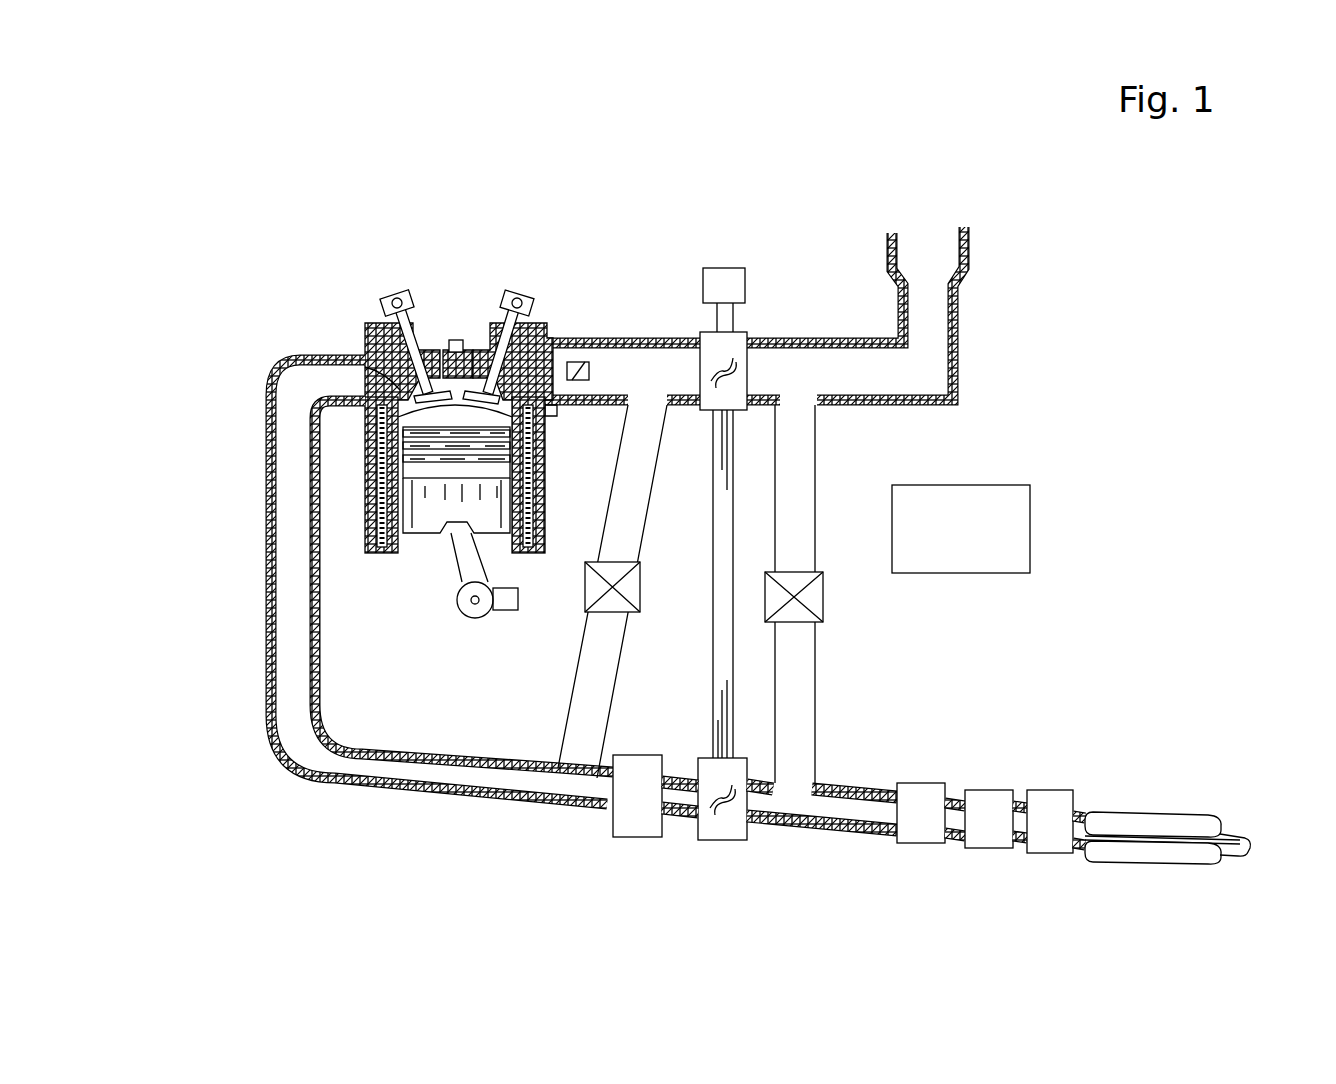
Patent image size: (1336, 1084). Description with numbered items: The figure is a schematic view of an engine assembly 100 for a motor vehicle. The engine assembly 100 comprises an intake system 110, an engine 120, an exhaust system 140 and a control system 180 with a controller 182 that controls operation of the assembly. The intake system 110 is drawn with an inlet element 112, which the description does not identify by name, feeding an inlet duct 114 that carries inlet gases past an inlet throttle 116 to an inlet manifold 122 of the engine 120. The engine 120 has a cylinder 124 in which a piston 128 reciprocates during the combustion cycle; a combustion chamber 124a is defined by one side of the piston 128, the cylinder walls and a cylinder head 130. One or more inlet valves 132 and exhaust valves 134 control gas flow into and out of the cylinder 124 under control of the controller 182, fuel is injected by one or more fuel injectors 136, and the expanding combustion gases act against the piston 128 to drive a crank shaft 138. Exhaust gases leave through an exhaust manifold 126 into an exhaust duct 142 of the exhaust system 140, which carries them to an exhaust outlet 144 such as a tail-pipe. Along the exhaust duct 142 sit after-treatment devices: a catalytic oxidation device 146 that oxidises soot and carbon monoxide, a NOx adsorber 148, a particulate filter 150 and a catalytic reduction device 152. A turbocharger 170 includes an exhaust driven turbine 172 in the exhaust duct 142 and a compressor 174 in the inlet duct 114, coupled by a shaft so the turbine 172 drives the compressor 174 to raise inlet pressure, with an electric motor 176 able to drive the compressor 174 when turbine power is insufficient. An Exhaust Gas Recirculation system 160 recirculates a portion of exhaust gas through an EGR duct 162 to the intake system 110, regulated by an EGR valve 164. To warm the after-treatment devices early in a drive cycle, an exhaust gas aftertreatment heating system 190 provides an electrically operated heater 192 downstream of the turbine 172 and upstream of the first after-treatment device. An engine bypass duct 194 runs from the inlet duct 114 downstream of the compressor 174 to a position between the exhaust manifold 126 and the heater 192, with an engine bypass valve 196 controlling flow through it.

The engine assembly 100 is at (613, 228).
The intake system 110 is at (978, 311).
The intake passage 112 is at (932, 225).
The inlet duct 114 is at (960, 362).
The inlet throttle 116 is at (600, 345).
The engine 120 is at (380, 262).
The inlet manifold 122 is at (527, 390).
The cylinder 124 is at (405, 548).
The combustion chamber 124a is at (452, 413).
The exhaust manifold 126 is at (373, 387).
The piston 128 is at (497, 503).
The cylinder head 130 is at (473, 350).
The inlet valves 132 is at (535, 340).
The exhaust valves 134 is at (378, 365).
The fuel injectors 136 is at (540, 410).
The crank shaft 138 is at (478, 617).
The exhaust system 140 is at (198, 657).
The exhaust duct 142 is at (267, 508).
The exhaust outlet 144 is at (1252, 840).
The catalytic oxidation device 146 is at (630, 818).
The NOx adsorber 148 is at (920, 800).
The particulate filter 150 is at (983, 805).
The catalytic reduction device 152 is at (1050, 805).
The Exhaust Gas Recirculation system 160 is at (874, 622).
The EGR duct 162 is at (815, 540).
The EGR valve 164 is at (822, 598).
The turbocharger 170 is at (762, 860).
The exhaust driven turbine 172 is at (707, 757).
The compressor 174 is at (746, 332).
The electric motor 176 is at (727, 265).
The control system 180 is at (1064, 458).
The controller 182 is at (1030, 517).
The exhaust gas aftertreatment heating system 190 is at (660, 658).
The heater 192 is at (612, 762).
The engine bypass duct 194 is at (622, 520).
The engine bypass valve 196 is at (590, 590).